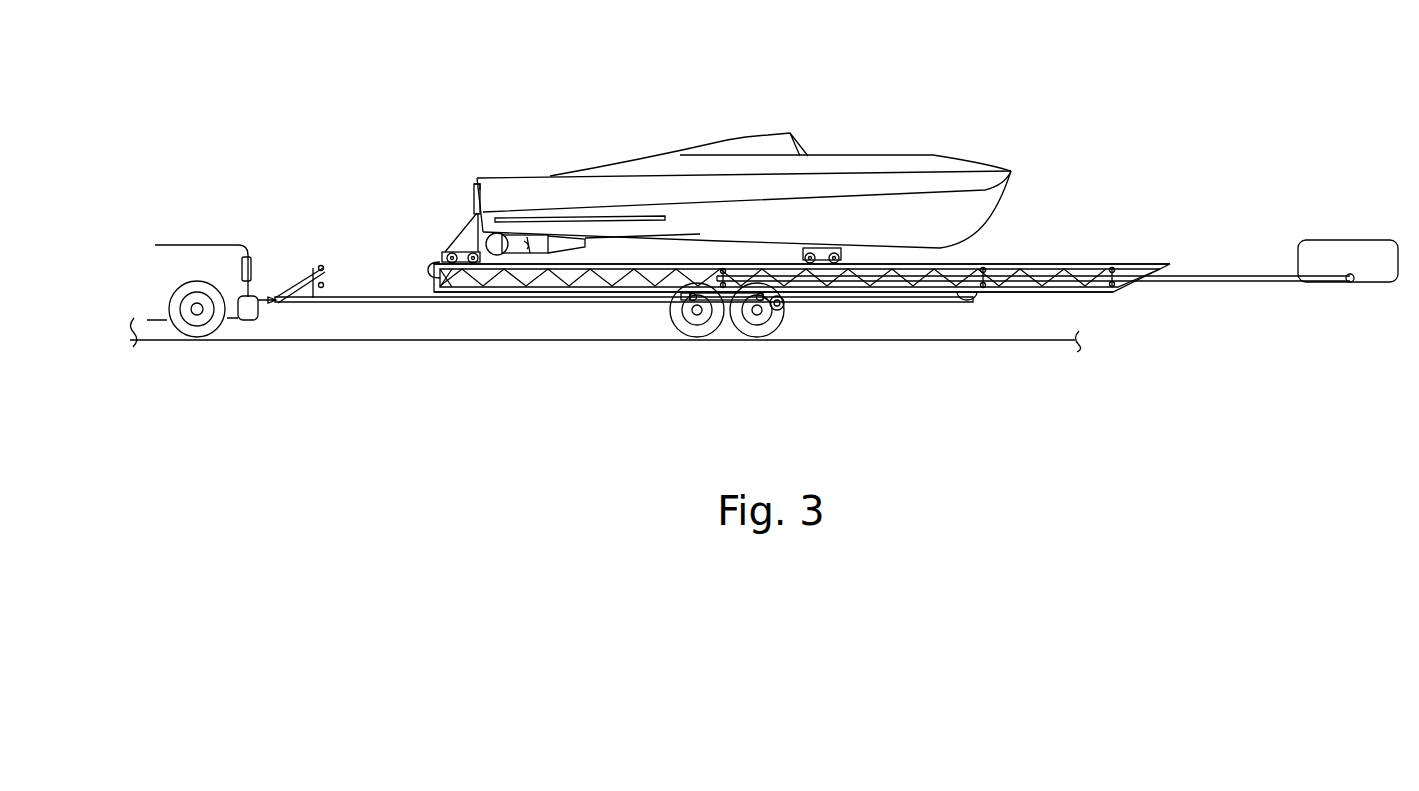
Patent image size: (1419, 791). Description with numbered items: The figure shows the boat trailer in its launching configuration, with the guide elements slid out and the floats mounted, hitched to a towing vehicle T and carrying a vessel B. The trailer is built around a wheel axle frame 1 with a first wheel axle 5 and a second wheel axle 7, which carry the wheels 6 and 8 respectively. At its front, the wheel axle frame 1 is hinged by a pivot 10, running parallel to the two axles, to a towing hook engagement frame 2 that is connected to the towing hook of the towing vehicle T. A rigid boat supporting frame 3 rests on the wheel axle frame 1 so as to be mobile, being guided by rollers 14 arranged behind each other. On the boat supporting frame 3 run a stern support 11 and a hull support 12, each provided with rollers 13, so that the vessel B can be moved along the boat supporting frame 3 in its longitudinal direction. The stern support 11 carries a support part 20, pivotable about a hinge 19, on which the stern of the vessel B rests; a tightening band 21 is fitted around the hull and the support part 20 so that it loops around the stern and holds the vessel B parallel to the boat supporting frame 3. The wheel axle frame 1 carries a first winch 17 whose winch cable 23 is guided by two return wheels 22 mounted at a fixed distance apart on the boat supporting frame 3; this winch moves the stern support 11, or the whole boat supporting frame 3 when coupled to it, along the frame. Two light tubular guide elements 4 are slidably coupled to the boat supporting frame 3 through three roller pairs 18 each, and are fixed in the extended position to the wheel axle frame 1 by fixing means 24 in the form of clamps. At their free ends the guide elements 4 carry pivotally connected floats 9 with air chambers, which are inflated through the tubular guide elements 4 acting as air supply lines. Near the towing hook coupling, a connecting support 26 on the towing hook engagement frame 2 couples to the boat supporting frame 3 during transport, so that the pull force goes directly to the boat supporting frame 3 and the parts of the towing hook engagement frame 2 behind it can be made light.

The towing vehicle T is at (228, 255).
The vessel B is at (744, 142).
The wheel axle frame 1 is at (874, 263).
The towing hook engagement frame 2 is at (393, 300).
The boat supporting frame 3 is at (1068, 291).
The guide element 4 is at (1212, 276).
The first wheel axle 5 is at (672, 326).
The wheel 6 is at (697, 314).
The second wheel axle 7 is at (759, 314).
The wheel 8 is at (782, 324).
The float 9 is at (1353, 252).
The pivot 10 is at (682, 297).
The stern support 11 is at (457, 252).
The hull support 12 is at (828, 247).
The rollers 13 is at (445, 254).
The rollers 14 is at (695, 294).
The first winch 17 is at (783, 309).
The roller pairs 18 is at (1111, 282).
The hinge 19 is at (475, 214).
The support part 20 is at (474, 186).
The tightening band 21 is at (947, 193).
The return wheels 22 is at (439, 262).
The winch cable 23 is at (853, 299).
The fixing means 24 is at (723, 268).
The connecting support 26 is at (320, 267).